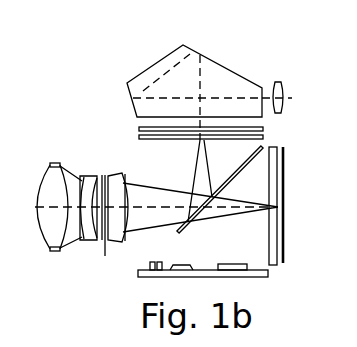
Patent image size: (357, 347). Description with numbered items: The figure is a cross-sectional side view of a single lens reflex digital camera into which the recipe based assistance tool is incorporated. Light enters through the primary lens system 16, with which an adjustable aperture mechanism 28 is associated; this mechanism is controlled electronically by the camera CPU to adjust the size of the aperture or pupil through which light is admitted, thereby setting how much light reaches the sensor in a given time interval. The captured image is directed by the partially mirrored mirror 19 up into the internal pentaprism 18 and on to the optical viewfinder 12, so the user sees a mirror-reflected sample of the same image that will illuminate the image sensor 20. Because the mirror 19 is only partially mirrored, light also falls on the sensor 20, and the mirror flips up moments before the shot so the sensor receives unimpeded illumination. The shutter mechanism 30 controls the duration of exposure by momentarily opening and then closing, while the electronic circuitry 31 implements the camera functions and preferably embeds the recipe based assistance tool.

The optical viewfinder 12 is at (284, 90).
The primary lens system 16 is at (69, 156).
The internal pentaprism 18 is at (166, 66).
The mirror 19 is at (228, 178).
The image sensor 20 is at (284, 250).
The adjustable aperture mechanism 28 is at (116, 222).
The shutter mechanism 30 is at (268, 225).
The electronic circuitry 31 is at (248, 272).